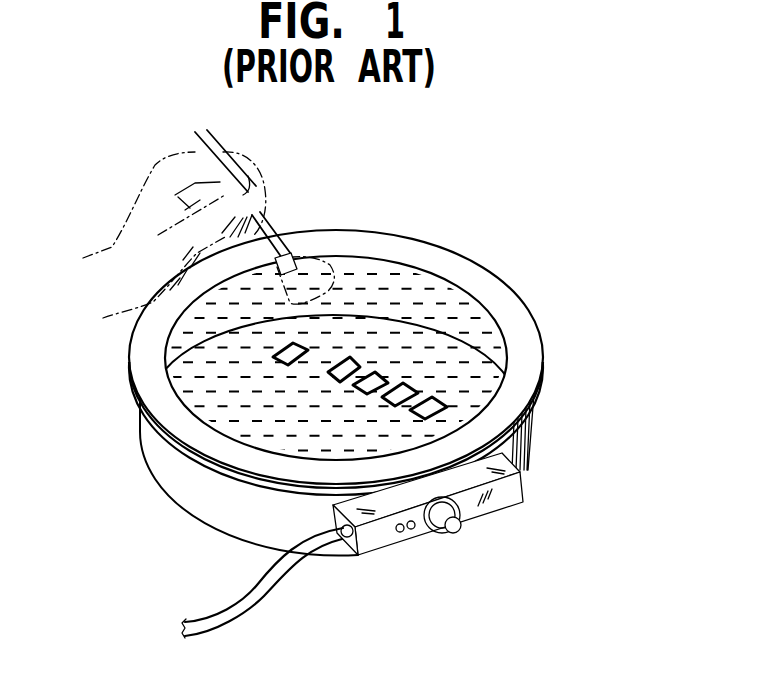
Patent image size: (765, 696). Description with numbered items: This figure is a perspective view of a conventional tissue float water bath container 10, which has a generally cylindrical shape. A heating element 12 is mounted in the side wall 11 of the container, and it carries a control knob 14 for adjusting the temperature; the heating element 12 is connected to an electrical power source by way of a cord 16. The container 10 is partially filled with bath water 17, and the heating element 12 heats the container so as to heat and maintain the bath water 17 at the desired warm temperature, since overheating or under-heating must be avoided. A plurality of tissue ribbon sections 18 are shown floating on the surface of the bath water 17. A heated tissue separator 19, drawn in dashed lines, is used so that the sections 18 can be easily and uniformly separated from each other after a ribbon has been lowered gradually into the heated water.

The tissue float water bath container 10 is at (550, 428).
The side wall 11 is at (198, 498).
The heating element 12 is at (517, 494).
The control knob 14 is at (454, 533).
The cord 16 is at (272, 585).
The bath water 17 is at (439, 313).
The tissue ribbon sections 18 is at (407, 390).
The heated tissue separator 19 is at (197, 141).